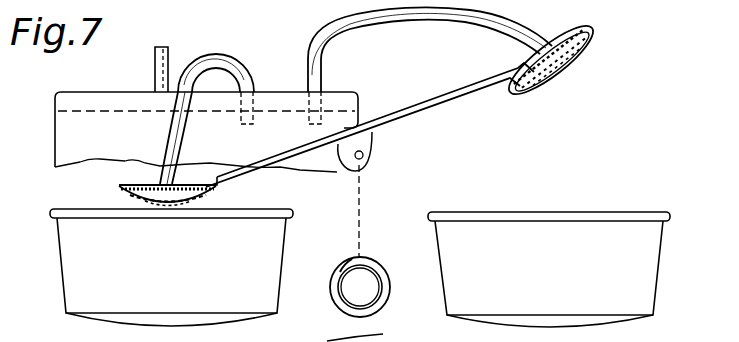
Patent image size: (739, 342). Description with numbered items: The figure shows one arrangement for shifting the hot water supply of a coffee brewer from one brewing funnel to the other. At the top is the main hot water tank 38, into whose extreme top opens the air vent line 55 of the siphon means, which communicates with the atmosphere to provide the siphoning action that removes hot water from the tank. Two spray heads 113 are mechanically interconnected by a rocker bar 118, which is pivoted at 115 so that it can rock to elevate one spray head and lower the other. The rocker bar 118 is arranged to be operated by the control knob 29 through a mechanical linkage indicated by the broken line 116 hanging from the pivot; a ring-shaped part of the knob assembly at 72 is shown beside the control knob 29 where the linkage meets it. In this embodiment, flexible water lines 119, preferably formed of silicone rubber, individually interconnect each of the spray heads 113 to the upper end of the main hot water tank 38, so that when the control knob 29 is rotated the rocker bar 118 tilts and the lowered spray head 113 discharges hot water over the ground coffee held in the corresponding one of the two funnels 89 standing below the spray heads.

The main hot water tank 38 is at (62, 134).
The air vent line 55 is at (155, 57).
The flexible water lines 119 is at (183, 128).
The rocker bar 118 is at (436, 104).
The spray heads 113 is at (129, 187).
The pivot 115 is at (373, 154).
The broken line 116 is at (366, 200).
The control knob 29 is at (373, 283).
The ring hook 72 is at (343, 267).
The funnels 89 is at (273, 251).